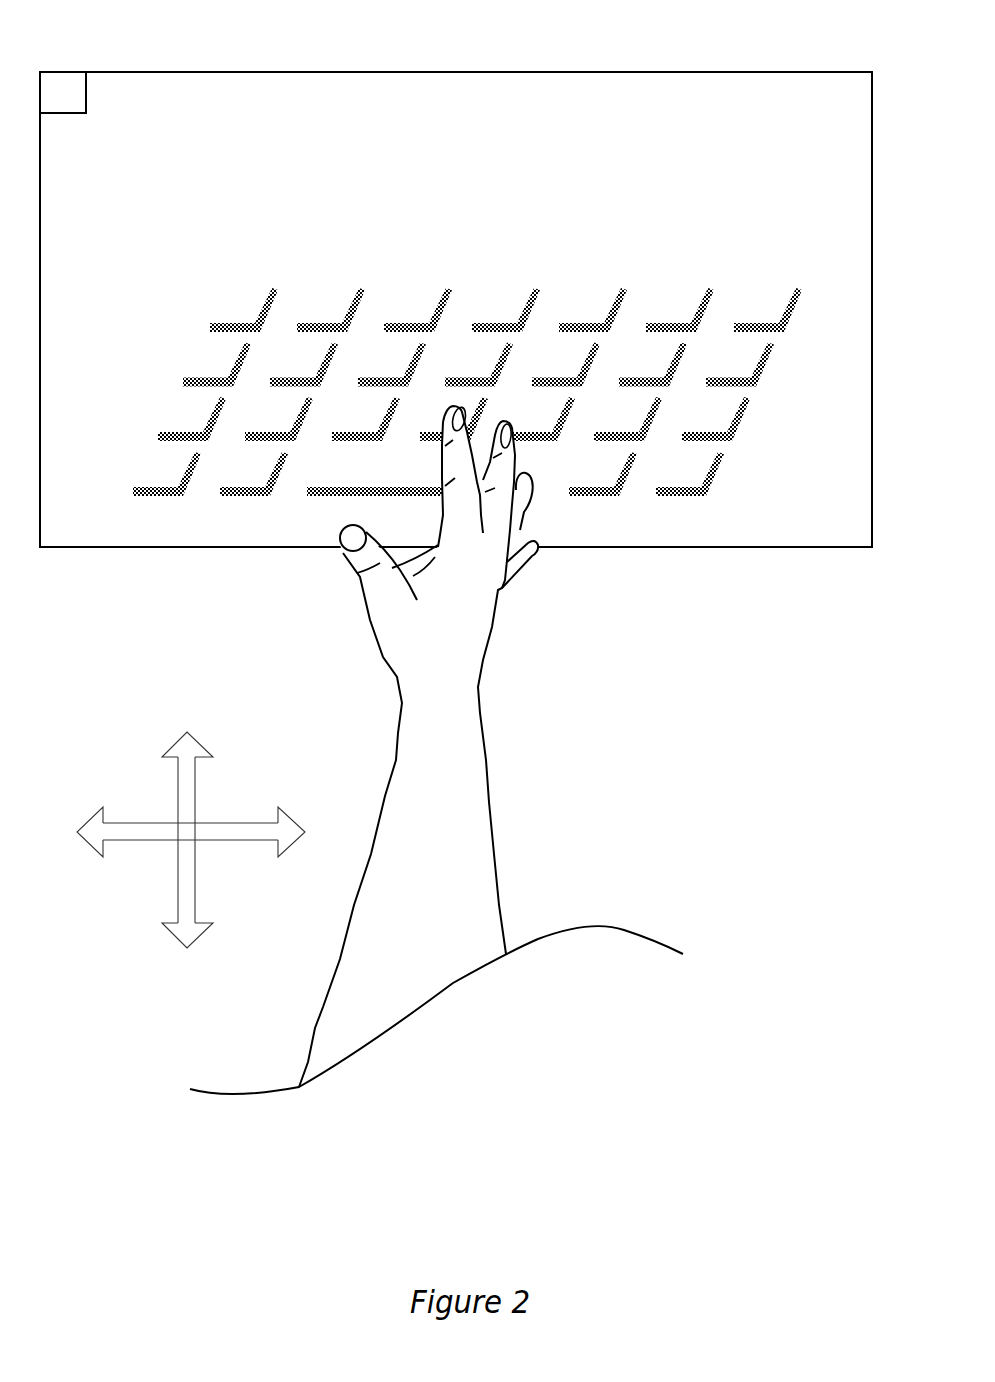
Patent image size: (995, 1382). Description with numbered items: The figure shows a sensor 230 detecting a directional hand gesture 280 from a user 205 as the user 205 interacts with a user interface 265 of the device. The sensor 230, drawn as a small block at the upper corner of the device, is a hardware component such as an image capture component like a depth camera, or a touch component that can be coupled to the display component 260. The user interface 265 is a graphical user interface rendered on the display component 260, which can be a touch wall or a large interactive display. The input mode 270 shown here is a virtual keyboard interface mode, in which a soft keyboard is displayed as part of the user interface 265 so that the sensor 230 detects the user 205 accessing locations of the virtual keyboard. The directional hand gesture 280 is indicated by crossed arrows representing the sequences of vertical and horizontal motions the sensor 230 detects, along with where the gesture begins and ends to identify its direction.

The user 205 is at (402, 944).
The sensor 230 is at (63, 54).
The display component 260 is at (437, 133).
The user interface 265 is at (699, 90).
The input mode 270 is at (694, 270).
The directional hand gesture 280 is at (205, 695).